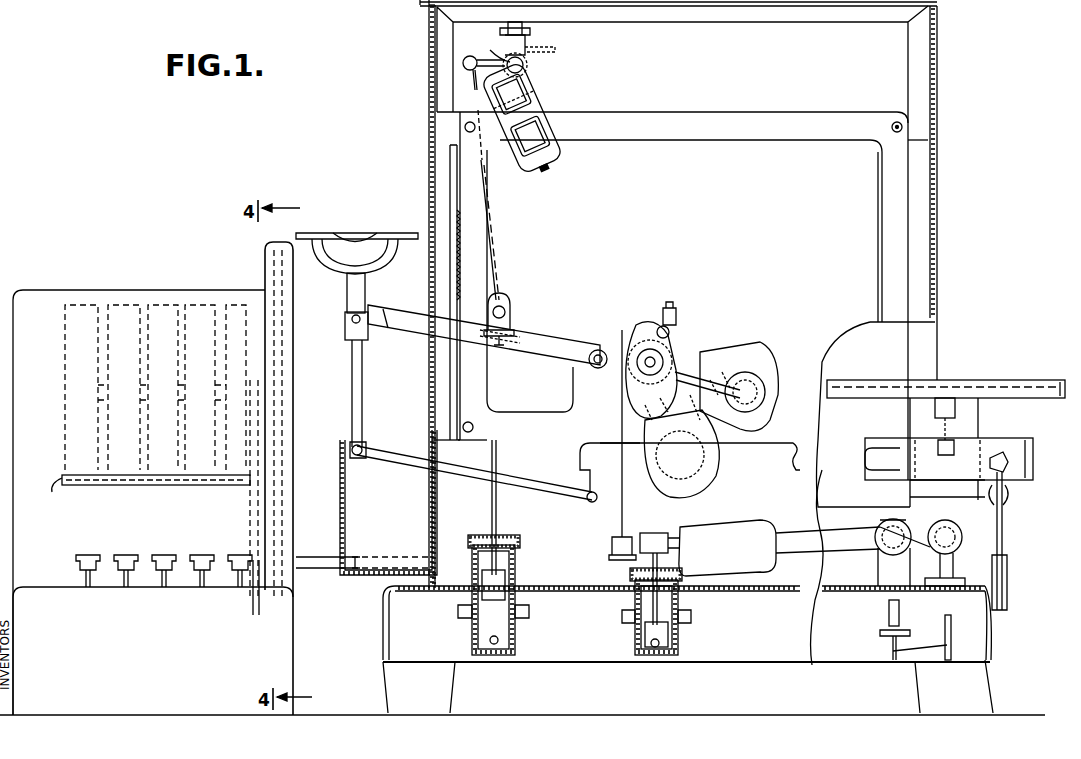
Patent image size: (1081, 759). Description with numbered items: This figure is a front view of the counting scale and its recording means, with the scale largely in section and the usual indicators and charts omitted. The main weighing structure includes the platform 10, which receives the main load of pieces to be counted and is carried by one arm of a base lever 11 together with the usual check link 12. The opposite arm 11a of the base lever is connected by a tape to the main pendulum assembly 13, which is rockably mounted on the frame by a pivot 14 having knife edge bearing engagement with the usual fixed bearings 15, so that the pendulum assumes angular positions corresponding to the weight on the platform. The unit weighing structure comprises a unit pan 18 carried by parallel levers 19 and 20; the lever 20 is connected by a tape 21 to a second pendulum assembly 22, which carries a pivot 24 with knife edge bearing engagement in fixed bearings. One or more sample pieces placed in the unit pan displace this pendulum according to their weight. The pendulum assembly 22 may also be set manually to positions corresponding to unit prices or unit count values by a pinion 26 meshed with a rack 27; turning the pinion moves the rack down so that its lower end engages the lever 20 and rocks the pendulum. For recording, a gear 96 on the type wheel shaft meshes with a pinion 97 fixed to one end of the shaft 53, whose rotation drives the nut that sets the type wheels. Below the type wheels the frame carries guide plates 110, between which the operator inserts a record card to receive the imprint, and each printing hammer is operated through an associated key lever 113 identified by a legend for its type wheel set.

The platform 10 is at (971, 381).
The base lever 11 is at (821, 553).
The opposite arm 11a is at (793, 531).
The check link 12 is at (918, 648).
The main pendulum assembly 13 is at (678, 336).
The pivot 14 is at (636, 353).
The fixed bearings 15 is at (600, 349).
The unit pan 18 is at (375, 236).
The parallel lever 19 is at (412, 462).
The lever 20 is at (403, 326).
The tape 21 is at (497, 266).
The pendulum assembly 22 is at (539, 69).
The pivot 24 is at (495, 60).
The pinion 26 is at (447, 264).
The rack 27 is at (456, 290).
The shaft 53 is at (317, 566).
The gear 96 is at (283, 338).
The pinion 97 is at (282, 556).
The guide plates 110 is at (143, 493).
The key lever 113 is at (96, 553).